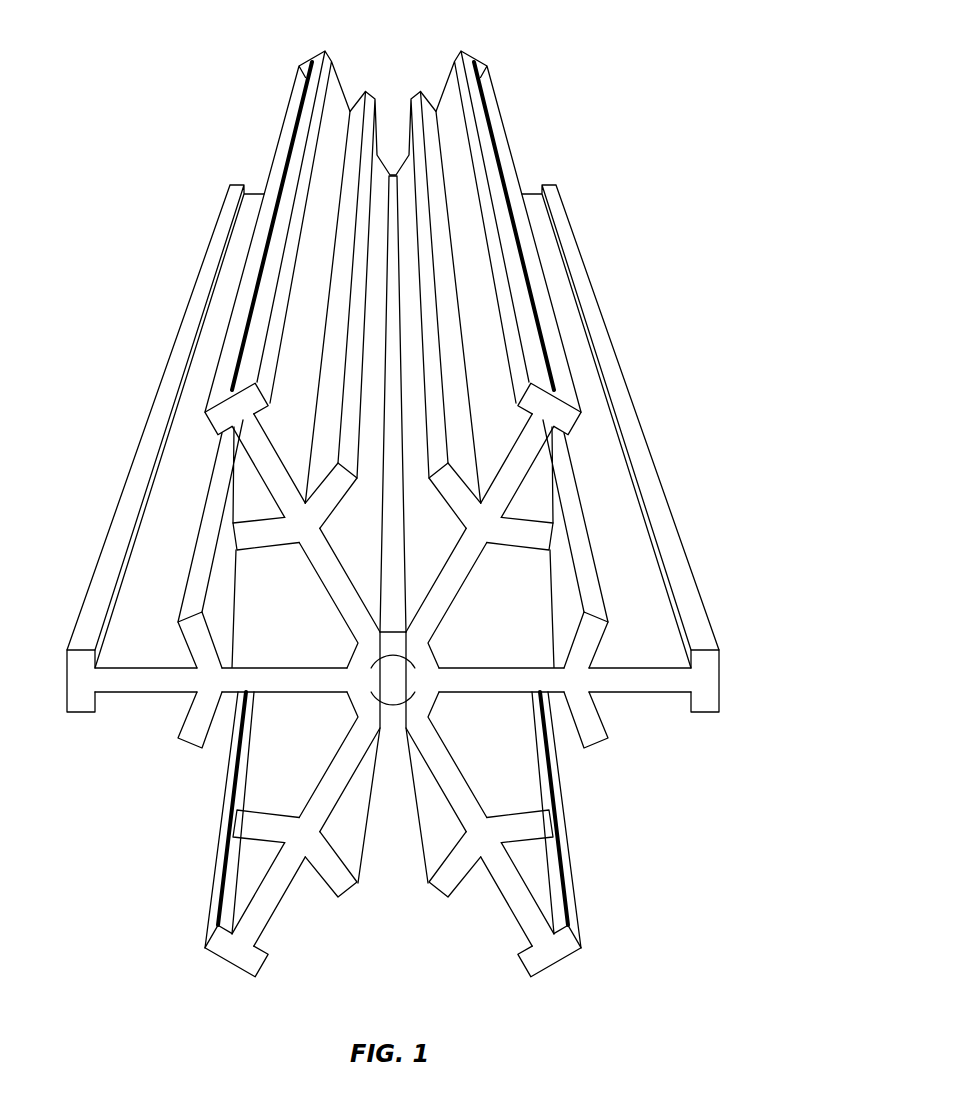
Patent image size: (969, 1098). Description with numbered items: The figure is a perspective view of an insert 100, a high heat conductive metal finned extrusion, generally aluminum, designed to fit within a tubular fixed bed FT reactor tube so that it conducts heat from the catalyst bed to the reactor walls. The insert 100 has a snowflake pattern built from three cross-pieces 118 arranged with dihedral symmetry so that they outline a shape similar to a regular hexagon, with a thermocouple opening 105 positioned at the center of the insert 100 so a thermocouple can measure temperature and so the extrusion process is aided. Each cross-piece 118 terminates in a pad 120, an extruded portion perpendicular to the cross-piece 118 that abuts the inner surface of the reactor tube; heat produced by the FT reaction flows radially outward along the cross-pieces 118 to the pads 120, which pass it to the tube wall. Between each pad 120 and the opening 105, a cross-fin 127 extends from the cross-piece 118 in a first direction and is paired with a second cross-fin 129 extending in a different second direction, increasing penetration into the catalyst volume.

The insert 100 is at (645, 336).
The thermocouple opening 105 is at (390, 730).
The cross-piece 118 is at (282, 897).
The pad 120 is at (212, 426).
The cross-fin 127 is at (258, 505).
The second cross-fin 129 is at (325, 463).